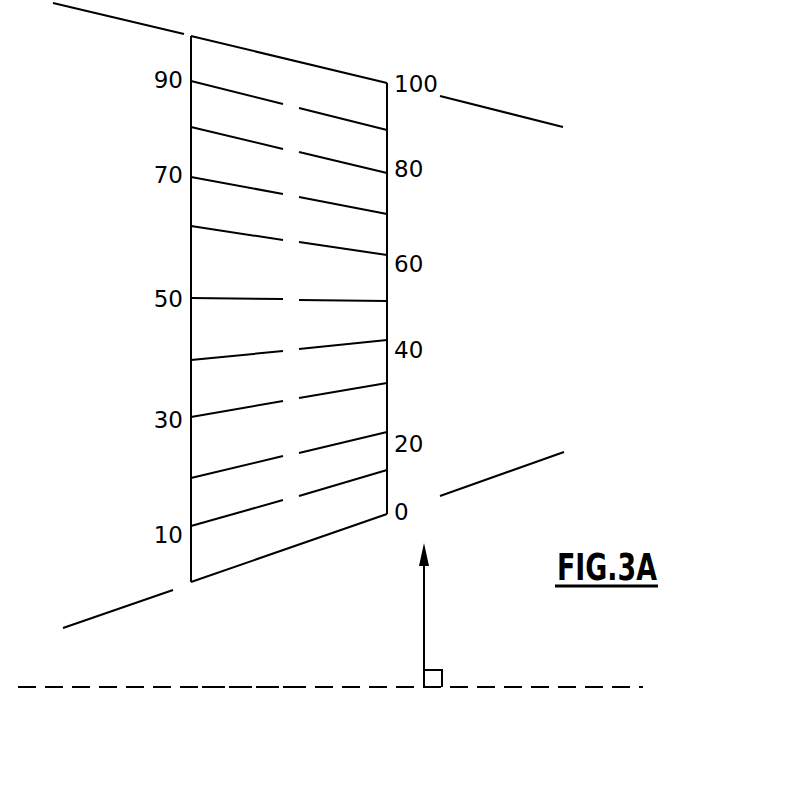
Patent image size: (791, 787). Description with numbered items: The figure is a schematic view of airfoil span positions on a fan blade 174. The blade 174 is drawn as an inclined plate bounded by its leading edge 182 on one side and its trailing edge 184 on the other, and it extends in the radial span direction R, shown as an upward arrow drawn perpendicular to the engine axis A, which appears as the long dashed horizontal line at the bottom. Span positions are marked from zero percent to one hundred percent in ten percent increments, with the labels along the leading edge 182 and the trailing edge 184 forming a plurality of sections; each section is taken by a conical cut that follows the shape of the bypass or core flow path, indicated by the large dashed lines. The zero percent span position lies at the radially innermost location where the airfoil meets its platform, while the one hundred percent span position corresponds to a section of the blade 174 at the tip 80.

The tip 80 is at (287, 56).
The fan blade 174 is at (416, 217).
The leading edge 182 is at (191, 248).
The trailing edge 184 is at (388, 287).
The engine axis A is at (220, 687).
The radial span direction R is at (425, 624).